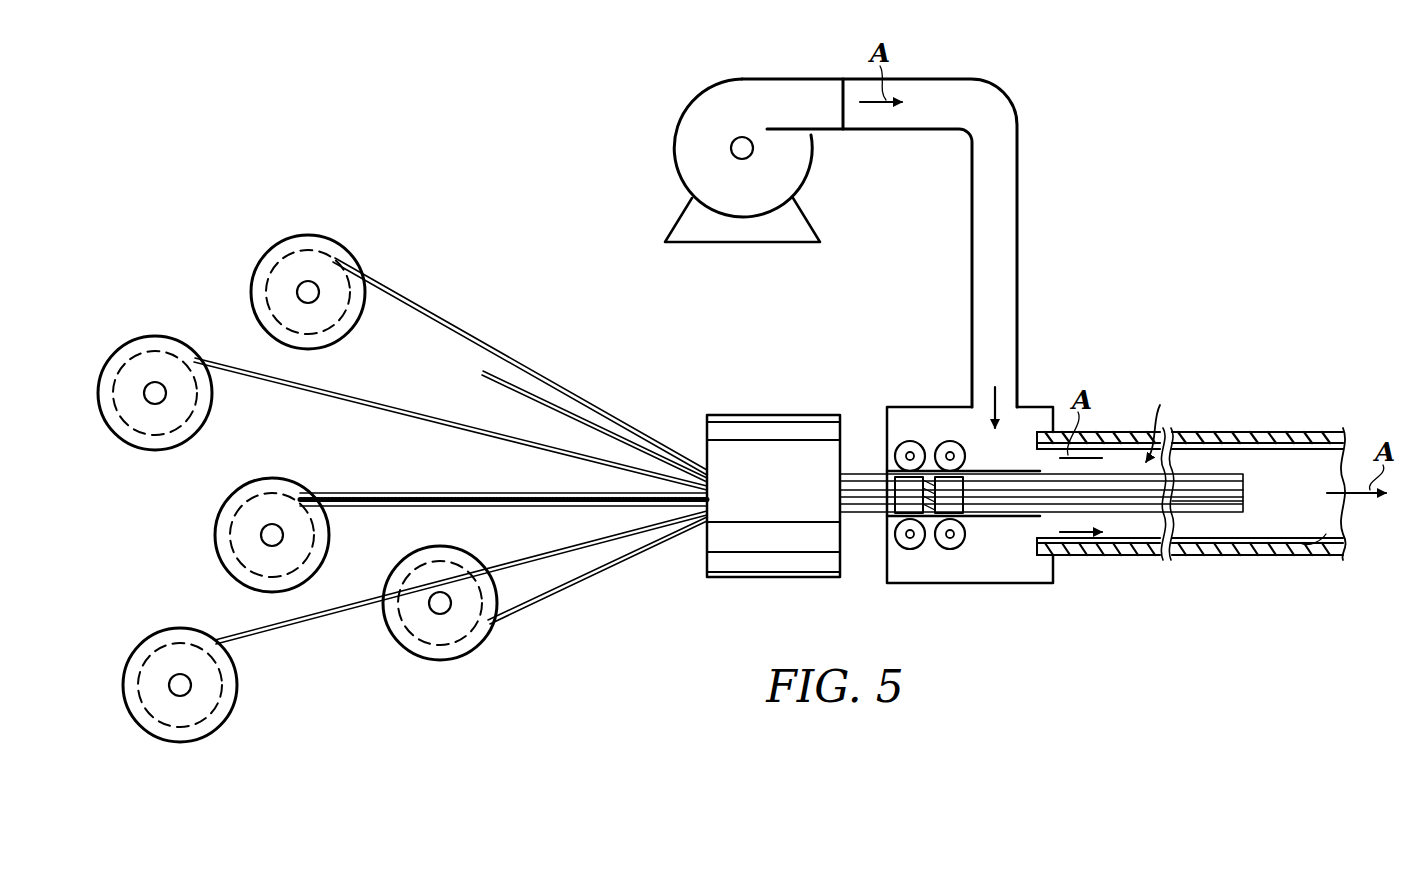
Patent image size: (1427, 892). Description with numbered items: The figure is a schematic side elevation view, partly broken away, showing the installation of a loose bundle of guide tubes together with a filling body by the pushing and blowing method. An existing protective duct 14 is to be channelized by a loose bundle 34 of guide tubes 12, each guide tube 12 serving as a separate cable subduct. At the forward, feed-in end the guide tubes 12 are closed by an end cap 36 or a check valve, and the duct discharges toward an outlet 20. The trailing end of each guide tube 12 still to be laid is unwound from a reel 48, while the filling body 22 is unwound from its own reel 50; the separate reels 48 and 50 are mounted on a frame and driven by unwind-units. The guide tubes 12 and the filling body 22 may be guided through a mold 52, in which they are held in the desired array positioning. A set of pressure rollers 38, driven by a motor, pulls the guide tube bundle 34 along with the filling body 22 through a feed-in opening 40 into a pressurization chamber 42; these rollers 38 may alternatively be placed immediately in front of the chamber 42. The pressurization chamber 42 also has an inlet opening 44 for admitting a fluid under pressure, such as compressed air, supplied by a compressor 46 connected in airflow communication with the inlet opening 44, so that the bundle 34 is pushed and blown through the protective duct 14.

The guide tube 12 is at (244, 364).
The protective duct 14 is at (1120, 431).
The tube outlet 20 is at (1324, 534).
The filling body 22 is at (364, 494).
The loose bundle 34 is at (1163, 419).
The end cap 36 is at (1246, 504).
The pressure rollers 38 is at (932, 432).
The feed-in opening 40 is at (888, 468).
The pressurization chamber 42 is at (975, 572).
The inlet opening 44 is at (1003, 409).
The compressor 46 is at (680, 122).
The reel 48 is at (278, 246).
The reel 50 is at (216, 532).
The mold 52 is at (769, 414).